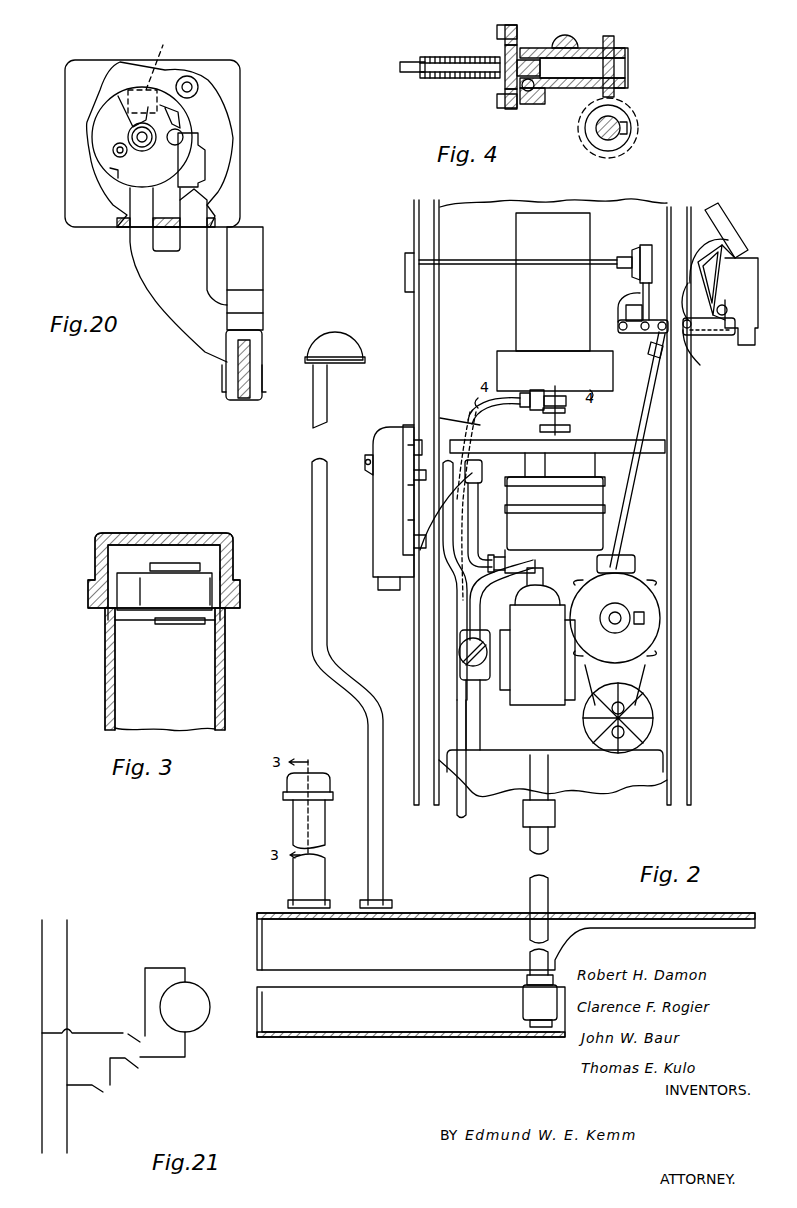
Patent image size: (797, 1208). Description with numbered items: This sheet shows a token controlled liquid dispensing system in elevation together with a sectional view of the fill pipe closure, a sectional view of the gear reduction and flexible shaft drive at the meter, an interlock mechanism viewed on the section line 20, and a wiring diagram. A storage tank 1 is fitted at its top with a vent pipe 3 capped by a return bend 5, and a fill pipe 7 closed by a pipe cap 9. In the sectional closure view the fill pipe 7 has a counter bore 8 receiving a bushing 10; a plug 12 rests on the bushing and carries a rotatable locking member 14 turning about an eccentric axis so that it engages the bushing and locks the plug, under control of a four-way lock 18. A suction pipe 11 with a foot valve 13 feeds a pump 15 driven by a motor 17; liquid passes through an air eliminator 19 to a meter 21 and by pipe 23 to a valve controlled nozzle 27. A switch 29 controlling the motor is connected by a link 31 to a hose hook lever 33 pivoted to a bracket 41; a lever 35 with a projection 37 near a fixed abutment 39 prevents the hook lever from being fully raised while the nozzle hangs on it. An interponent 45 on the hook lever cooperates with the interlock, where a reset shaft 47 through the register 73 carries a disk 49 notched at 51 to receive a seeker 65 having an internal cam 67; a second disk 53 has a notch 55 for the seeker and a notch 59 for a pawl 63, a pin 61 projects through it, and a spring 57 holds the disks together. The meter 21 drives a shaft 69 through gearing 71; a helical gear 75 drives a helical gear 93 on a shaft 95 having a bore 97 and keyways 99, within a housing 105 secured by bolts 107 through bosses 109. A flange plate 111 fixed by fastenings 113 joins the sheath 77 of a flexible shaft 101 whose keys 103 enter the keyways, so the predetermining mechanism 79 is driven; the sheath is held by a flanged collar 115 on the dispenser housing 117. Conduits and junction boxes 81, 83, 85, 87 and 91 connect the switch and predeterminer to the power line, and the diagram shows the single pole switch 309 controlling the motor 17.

In FIG. 2, the storage tank 1 is at (272, 942).
In FIG. 2, the vent pipe 3 is at (384, 870).
In FIG. 2, the return bend 5 is at (345, 343).
In FIG. 2, the fill pipe 7 is at (300, 822).
In FIG. 3, the fill pipe 7 is at (105, 654).
In FIG. 3, the counter bore 8 is at (115, 626).
In FIG. 2, the pipe cap 9 is at (292, 783).
In FIG. 3, the pipe cap 9 is at (95, 547).
In FIG. 3, the bushing 10 is at (108, 612).
In FIG. 2, the suction pipe 11 is at (530, 886).
In FIG. 3, the plug 12 is at (192, 592).
In FIG. 2, the foot valve 13 is at (523, 1004).
In FIG. 3, the rotatable locking member 14 is at (210, 626).
In FIG. 2, the pump 15 is at (640, 718).
In FIG. 2, the motor 17 is at (655, 630).
In FIG. 21, the motor 17 is at (200, 1000).
In FIG. 3, the four-way lock 18 is at (192, 568).
In FIG. 2, the air eliminator 19 is at (548, 688).
In FIG. 2, the section line 20 is at (640, 231).
In FIG. 2, the meter 21 is at (590, 529).
In FIG. 2, the pipe 23 is at (440, 418).
In FIG. 2, the valve controlled nozzle 27 is at (748, 280).
In FIG. 2, the switch 29 is at (630, 565).
In FIG. 21, the switch 29 is at (140, 1072).
In FIG. 2, the link 31 is at (632, 490).
In FIG. 20, the hose hook lever 33 is at (243, 398).
In FIG. 2, the hose hook lever 33 is at (728, 311).
In FIG. 2, the lever 35 is at (722, 333).
In FIG. 2, the projection 37 is at (722, 260).
In FIG. 2, the fixed abutment 39 is at (726, 225).
In FIG. 20, the bracket 41 is at (256, 268).
In FIG. 2, the bracket 41 is at (626, 300).
In FIG. 20, the interponent 45 is at (185, 330).
In FIG. 2, the interponent 45 is at (623, 322).
In FIG. 20, the reset shaft 47 is at (140, 136).
In FIG. 2, the reset shaft 47 is at (460, 262).
In FIG. 20, the disk 49 is at (105, 108).
In FIG. 20, the notch 51 is at (155, 75).
In FIG. 20, the second disk 53 is at (113, 157).
In FIG. 20, the notch 55 is at (118, 68).
In FIG. 20, the spring 57 is at (148, 152).
In FIG. 20, the notch 59 is at (112, 172).
In FIG. 20, the pin 61 is at (181, 134).
In FIG. 20, the pawl 63 is at (212, 148).
In FIG. 20, the seeker 65 is at (140, 230).
In FIG. 20, the internal cam 67 is at (192, 215).
In FIG. 4, the shaft 69 is at (600, 135).
In FIG. 2, the shaft 69 is at (565, 411).
In FIG. 2, the gearing 71 is at (577, 431).
In FIG. 2, the register 73 is at (566, 322).
In FIG. 4, the helical gear 75 is at (630, 112).
In FIG. 2, the helical gear 75 is at (556, 390).
In FIG. 4, the sheath 77 is at (440, 60).
In FIG. 2, the sheath 77 is at (480, 404).
In FIG. 2, the token operated predetermining mechanism 79 is at (365, 570).
In FIG. 2, the conduit 81 is at (458, 810).
In FIG. 2, the junction box 83 is at (460, 657).
In FIG. 2, the conduit 85 is at (458, 605).
In FIG. 2, the junction box 87 is at (414, 490).
In FIG. 2, the conduit 91 is at (488, 605).
In FIG. 4, the helical gear 93 is at (614, 45).
In FIG. 4, the shaft 95 is at (625, 70).
In FIG. 4, the bore 97 is at (538, 50).
In FIG. 4, the keyways 99 is at (515, 45).
In FIG. 4, the flexible shaft 101 is at (400, 62).
In FIG. 4, the keys 103 is at (518, 88).
In FIG. 4, the housing 105 is at (565, 88).
In FIG. 2, the housing 105 is at (523, 392).
In FIG. 4, the bolts 107 is at (528, 104).
In FIG. 4, the bosses 109 is at (530, 100).
In FIG. 2, the bosses 109 is at (538, 388).
In FIG. 4, the flange plate 111 is at (505, 45).
In FIG. 4, the fastenings 113 is at (505, 100).
In FIG. 2, the flanged collar 115 is at (420, 545).
In FIG. 2, the dispenser housing 117 is at (414, 348).
In FIG. 21, the switch 309 is at (100, 1088).